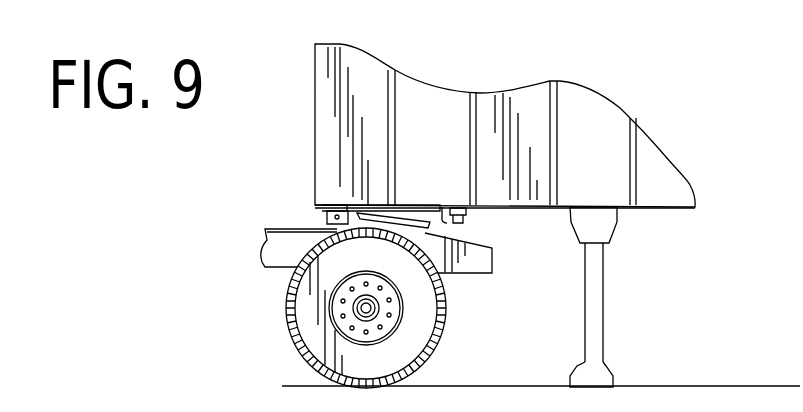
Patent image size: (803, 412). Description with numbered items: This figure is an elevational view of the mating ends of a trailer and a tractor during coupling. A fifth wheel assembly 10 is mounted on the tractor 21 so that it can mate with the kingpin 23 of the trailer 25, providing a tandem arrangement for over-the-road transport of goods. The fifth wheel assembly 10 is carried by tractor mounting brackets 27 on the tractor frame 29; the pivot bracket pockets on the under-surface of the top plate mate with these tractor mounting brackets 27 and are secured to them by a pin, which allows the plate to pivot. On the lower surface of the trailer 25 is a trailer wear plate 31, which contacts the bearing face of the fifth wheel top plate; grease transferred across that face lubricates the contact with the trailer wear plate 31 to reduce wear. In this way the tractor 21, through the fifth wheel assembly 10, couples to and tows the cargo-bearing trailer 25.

The fifth wheel assembly 10 is at (399, 215).
The tractor 21 is at (284, 265).
The kingpin 23 is at (470, 210).
The trailer 25 is at (403, 70).
The tractor mounting brackets 27 is at (333, 223).
The tractor frame 29 is at (273, 243).
The trailer wear plate 31 is at (447, 223).